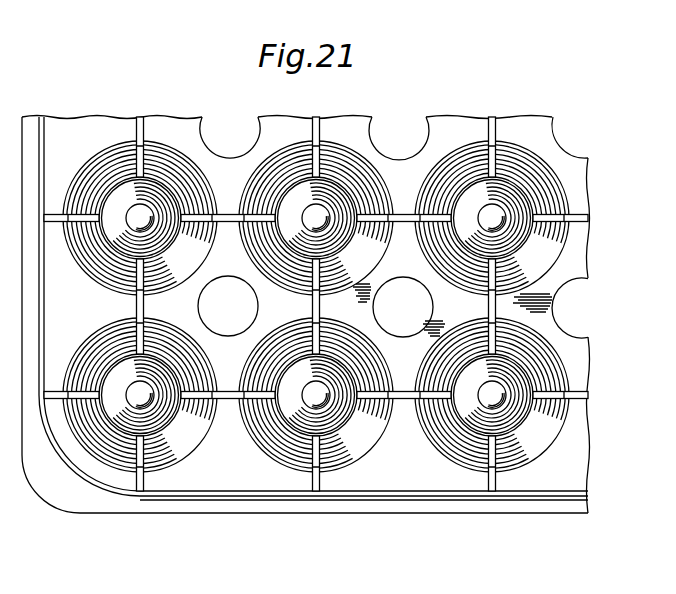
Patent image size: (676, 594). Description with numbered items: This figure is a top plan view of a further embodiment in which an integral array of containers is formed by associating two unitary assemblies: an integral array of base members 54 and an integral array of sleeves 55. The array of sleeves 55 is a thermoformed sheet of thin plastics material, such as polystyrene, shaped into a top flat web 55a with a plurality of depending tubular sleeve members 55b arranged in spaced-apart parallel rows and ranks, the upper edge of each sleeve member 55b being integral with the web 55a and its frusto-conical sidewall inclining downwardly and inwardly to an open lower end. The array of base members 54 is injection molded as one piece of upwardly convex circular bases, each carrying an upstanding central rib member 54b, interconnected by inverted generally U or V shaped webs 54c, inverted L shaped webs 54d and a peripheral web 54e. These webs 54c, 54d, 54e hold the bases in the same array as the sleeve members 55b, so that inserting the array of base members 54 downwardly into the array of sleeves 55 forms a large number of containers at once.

The integral array of base members 54 is at (174, 503).
The rib member 54b is at (323, 204).
The inverted U or V shaped webs 54c is at (227, 214).
The inverted L shaped webs 54d is at (46, 390).
The peripheral web 54e is at (233, 497).
The integral array of sleeves 55 is at (289, 516).
The top flat web 55a is at (375, 514).
The tubular sleeve member 55b is at (283, 453).